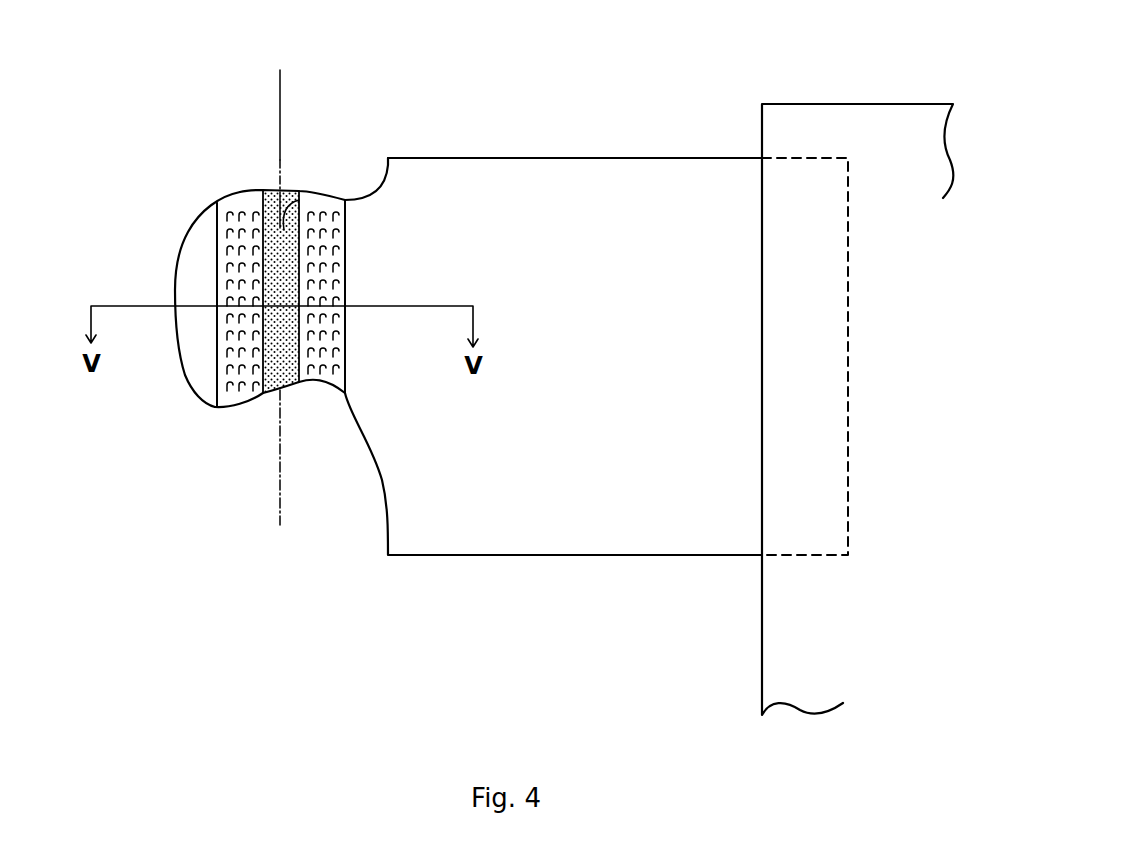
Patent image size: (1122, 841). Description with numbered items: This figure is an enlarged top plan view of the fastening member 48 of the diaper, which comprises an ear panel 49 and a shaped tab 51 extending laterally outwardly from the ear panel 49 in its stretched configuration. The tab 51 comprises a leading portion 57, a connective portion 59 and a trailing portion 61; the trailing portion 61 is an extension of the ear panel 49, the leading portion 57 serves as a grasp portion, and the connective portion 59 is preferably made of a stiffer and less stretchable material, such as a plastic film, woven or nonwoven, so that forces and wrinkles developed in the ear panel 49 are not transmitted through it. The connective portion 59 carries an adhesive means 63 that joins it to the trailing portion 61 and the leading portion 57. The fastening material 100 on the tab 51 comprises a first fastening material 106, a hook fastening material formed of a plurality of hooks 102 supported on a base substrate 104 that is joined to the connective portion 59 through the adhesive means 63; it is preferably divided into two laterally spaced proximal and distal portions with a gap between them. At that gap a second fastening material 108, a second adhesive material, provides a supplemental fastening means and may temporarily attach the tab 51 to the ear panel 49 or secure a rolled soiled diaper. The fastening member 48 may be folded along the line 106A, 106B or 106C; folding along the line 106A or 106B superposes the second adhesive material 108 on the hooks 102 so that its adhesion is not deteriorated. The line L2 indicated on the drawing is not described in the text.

The fastening member 48 is at (487, 123).
The ear panel 49 is at (587, 195).
The tab 51 is at (177, 382).
The leading portion 57 is at (195, 258).
The connective portion 59 is at (290, 190).
The trailing portion 61 is at (385, 220).
The adhesive means 63 is at (290, 387).
The fastening material 100 is at (241, 424).
The hooks 102 is at (223, 200).
The base substrate 104 is at (248, 191).
The first fastening material 106 is at (102, 96).
The fold line 106A is at (270, 192).
The fold line 106B is at (308, 192).
The fold line 106C is at (345, 348).
The second fastening material 108 is at (270, 392).
The axis line L2 is at (282, 505).